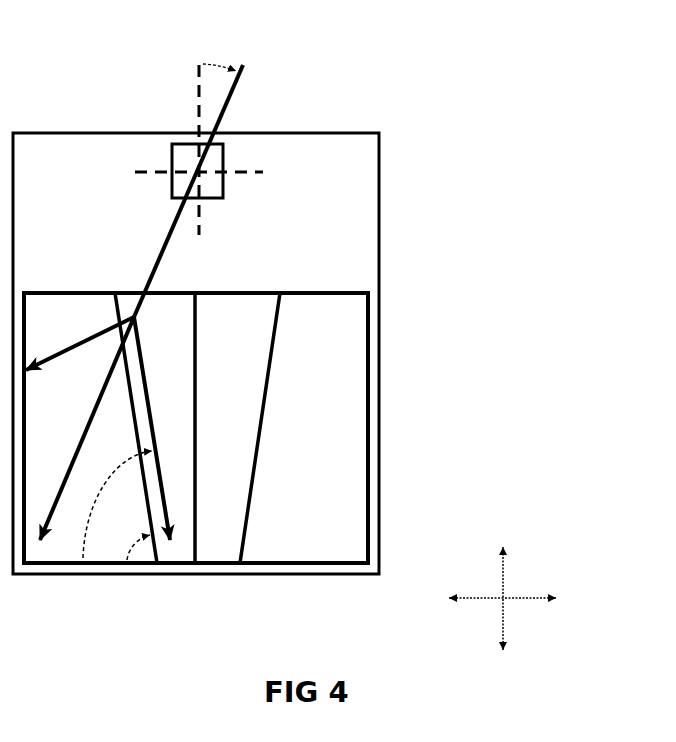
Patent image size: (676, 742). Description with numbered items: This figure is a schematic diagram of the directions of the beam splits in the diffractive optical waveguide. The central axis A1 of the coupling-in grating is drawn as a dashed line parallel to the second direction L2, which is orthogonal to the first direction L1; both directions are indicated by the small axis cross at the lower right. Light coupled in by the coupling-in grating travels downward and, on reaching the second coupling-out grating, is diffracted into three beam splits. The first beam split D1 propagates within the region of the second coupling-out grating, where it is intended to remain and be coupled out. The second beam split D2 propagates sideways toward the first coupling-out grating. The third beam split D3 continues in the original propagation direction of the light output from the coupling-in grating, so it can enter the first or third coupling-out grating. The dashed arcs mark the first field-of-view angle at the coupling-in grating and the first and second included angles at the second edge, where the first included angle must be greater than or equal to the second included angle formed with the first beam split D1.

The central axis A1 is at (183, 137).
The first beam split D1 is at (159, 428).
The second beam split D2 is at (80, 340).
The third beam split D3 is at (87, 428).
The first direction L1 is at (515, 587).
The second direction L2 is at (516, 588).